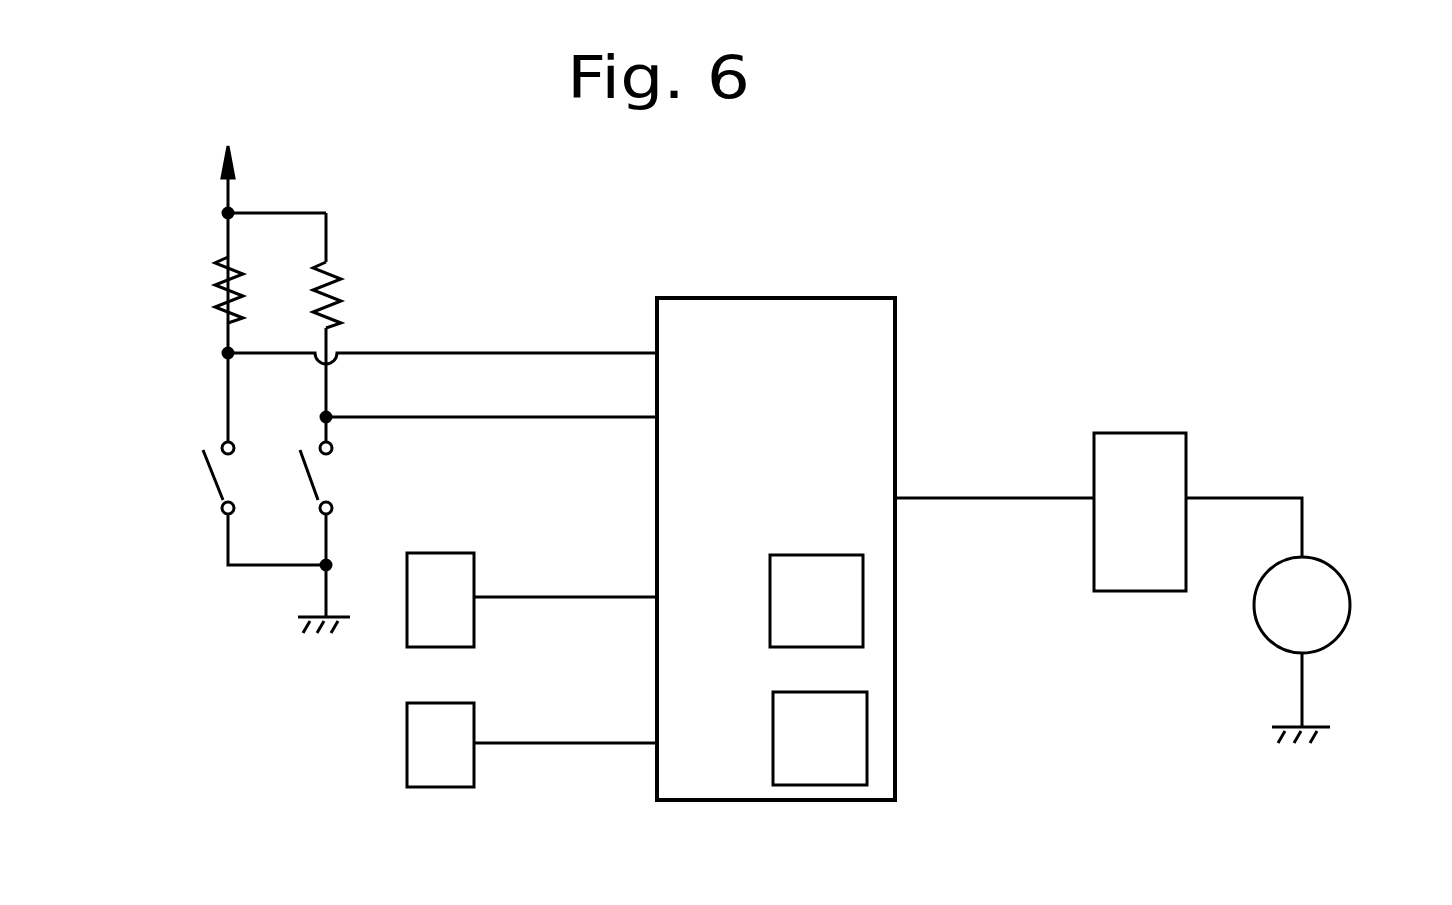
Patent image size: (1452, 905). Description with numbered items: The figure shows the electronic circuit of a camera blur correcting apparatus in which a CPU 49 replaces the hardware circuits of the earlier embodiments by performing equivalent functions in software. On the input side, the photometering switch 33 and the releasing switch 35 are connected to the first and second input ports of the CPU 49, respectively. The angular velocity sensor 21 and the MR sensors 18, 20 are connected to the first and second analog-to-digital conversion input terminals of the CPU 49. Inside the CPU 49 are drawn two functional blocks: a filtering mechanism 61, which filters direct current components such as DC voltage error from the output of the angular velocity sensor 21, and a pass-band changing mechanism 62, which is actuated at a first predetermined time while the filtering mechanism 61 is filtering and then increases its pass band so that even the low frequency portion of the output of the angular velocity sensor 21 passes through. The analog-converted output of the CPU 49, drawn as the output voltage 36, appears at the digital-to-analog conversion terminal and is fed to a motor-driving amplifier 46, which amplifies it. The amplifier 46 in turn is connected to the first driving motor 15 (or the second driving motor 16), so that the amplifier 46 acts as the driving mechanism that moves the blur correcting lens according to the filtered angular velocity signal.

The photometering switch 33 is at (212, 473).
The releasing switch 35 is at (316, 478).
The CPU 49 is at (738, 298).
The filtering mechanism 61 is at (840, 603).
The pass-band changing mechanism 62 is at (845, 748).
The angular velocity sensor 21 is at (455, 553).
The MR sensor 18 is at (532, 791).
The MR sensor 20 is at (476, 762).
The output voltage V36 36 is at (965, 498).
The motor-driving amplifier 46 is at (1128, 433).
The first driving motor 15 is at (1316, 620).
The second driving motor 16 is at (1332, 575).